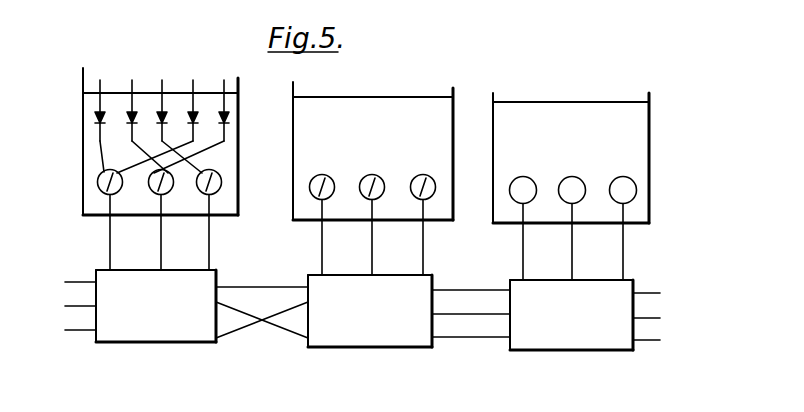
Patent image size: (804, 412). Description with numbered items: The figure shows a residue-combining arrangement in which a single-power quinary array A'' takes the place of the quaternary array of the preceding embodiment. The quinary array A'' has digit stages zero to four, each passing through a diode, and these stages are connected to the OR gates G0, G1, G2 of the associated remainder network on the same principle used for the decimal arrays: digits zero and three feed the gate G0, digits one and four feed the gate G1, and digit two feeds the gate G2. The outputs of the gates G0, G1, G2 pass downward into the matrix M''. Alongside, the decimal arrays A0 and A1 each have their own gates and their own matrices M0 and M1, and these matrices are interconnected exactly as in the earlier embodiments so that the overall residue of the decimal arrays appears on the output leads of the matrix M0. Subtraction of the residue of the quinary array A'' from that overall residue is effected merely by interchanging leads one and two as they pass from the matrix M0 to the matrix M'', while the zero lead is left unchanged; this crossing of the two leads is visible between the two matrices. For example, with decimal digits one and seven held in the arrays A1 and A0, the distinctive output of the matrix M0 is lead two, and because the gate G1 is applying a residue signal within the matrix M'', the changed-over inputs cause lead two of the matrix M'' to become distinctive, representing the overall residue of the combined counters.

The single-power quinary array A'' is at (147, 140).
The array A0 is at (389, 90).
The array A1 is at (585, 99).
The OR gate G0 is at (210, 223).
The OR gate G1 is at (275, 223).
The OR gate G2 is at (322, 223).
The matrix M'' is at (186, 310).
The matrix M0 is at (390, 327).
The matrix M1 is at (590, 347).